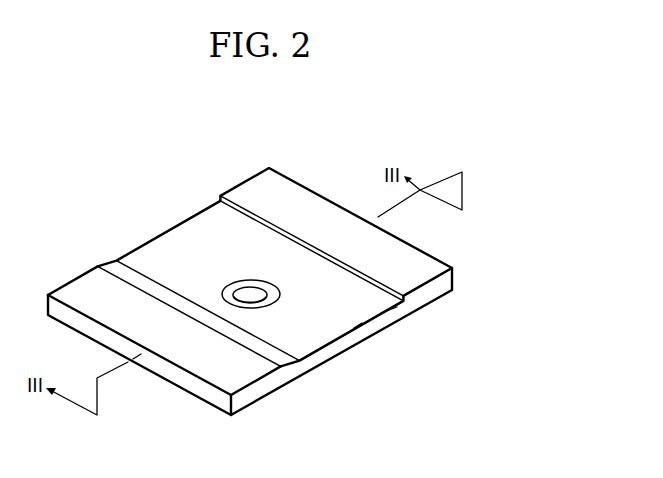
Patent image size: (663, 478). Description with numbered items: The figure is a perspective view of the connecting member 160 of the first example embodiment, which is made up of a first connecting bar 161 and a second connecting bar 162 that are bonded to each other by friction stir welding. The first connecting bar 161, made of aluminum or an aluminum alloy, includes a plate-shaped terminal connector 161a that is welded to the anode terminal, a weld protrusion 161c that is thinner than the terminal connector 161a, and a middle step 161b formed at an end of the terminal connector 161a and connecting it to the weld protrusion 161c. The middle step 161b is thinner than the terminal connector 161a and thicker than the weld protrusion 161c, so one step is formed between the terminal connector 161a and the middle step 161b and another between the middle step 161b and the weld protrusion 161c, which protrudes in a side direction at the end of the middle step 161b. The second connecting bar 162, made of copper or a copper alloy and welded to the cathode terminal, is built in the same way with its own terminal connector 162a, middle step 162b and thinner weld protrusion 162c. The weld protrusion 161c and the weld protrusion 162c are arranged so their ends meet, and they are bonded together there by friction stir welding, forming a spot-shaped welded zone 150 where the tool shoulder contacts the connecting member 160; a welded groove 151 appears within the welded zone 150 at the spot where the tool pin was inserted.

The welded zone 150 is at (263, 291).
The welded groove 151 is at (242, 292).
The connecting member 160 is at (131, 234).
The first connecting bar 161 is at (247, 398).
The terminal connector 161a is at (205, 378).
The middle step 161b is at (300, 366).
The weld protrusion 161c is at (328, 357).
The second connecting bar 162 is at (432, 295).
The terminal connector 162a is at (418, 265).
The middle step 162b is at (405, 320).
The weld protrusion 162c is at (366, 330).